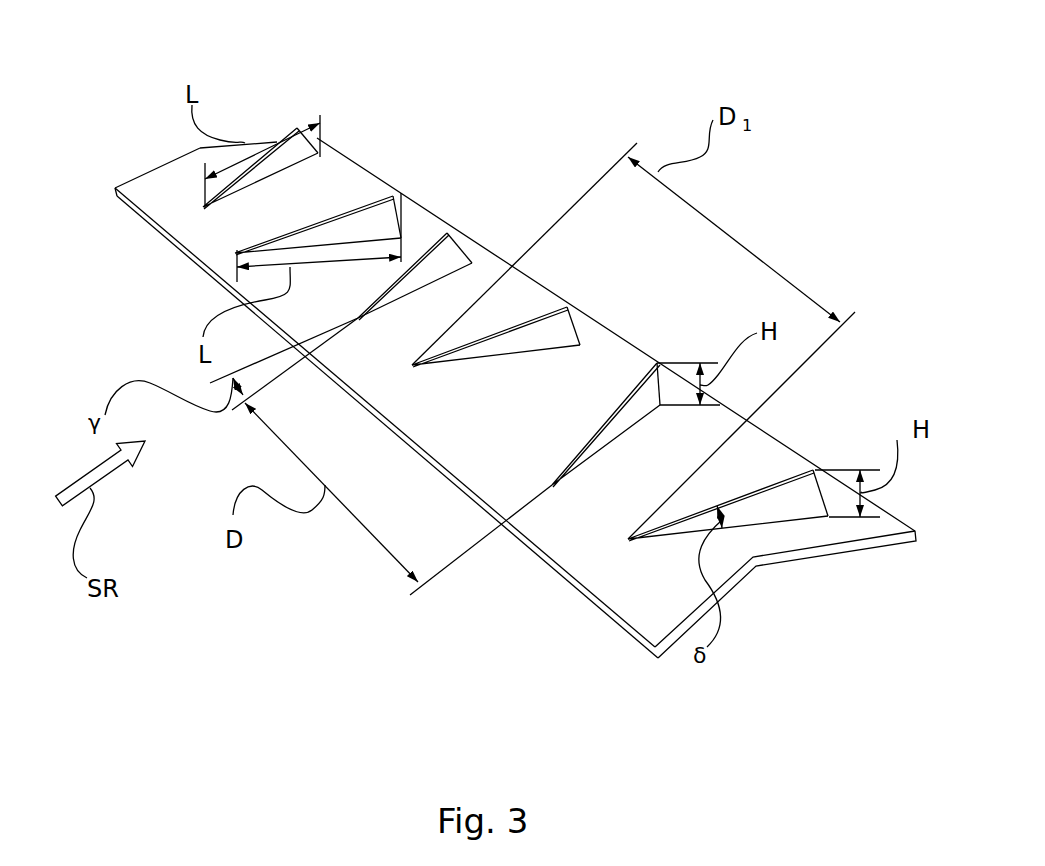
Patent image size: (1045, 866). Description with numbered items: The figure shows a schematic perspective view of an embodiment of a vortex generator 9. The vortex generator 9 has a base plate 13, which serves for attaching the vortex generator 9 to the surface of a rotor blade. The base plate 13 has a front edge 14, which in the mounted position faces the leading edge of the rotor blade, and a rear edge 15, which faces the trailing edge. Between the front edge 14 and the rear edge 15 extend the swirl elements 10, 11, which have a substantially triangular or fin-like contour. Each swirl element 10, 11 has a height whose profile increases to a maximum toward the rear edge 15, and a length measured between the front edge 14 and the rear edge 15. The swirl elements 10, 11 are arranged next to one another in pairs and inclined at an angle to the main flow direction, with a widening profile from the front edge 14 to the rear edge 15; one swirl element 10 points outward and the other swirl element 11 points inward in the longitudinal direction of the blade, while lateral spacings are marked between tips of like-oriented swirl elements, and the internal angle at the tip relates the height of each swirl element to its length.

The vortex generator 9 is at (815, 108).
The swirl element 10 is at (297, 130).
The swirl element 11 is at (360, 207).
The base plate 13 is at (150, 196).
The front edge 14 is at (597, 607).
The rear edge 15 is at (453, 254).